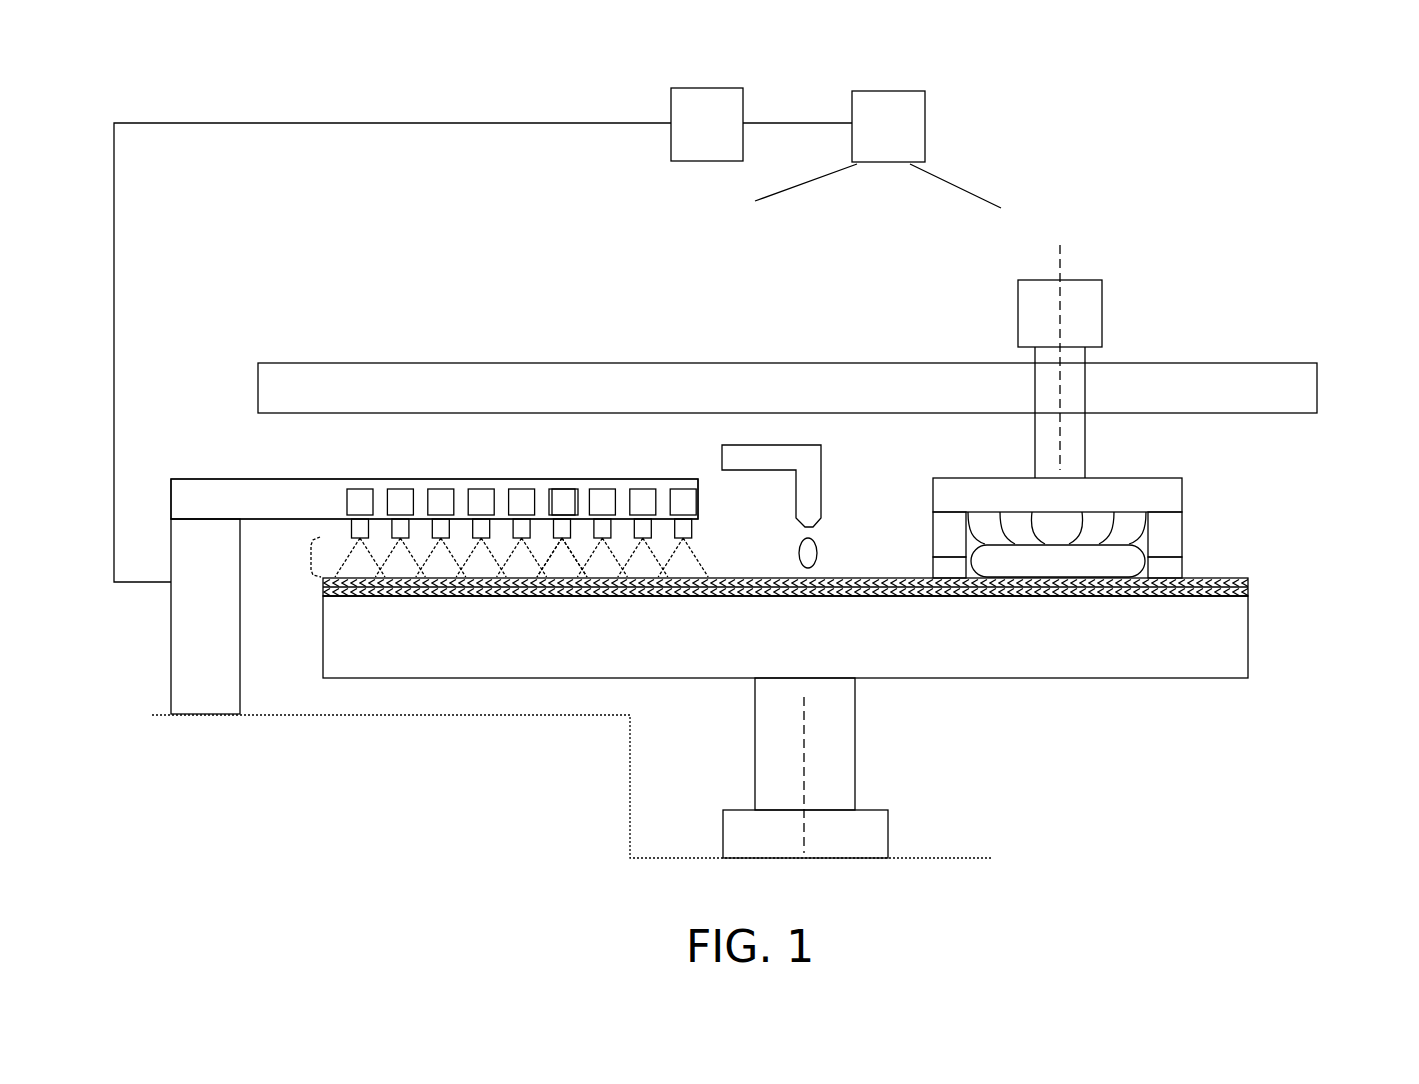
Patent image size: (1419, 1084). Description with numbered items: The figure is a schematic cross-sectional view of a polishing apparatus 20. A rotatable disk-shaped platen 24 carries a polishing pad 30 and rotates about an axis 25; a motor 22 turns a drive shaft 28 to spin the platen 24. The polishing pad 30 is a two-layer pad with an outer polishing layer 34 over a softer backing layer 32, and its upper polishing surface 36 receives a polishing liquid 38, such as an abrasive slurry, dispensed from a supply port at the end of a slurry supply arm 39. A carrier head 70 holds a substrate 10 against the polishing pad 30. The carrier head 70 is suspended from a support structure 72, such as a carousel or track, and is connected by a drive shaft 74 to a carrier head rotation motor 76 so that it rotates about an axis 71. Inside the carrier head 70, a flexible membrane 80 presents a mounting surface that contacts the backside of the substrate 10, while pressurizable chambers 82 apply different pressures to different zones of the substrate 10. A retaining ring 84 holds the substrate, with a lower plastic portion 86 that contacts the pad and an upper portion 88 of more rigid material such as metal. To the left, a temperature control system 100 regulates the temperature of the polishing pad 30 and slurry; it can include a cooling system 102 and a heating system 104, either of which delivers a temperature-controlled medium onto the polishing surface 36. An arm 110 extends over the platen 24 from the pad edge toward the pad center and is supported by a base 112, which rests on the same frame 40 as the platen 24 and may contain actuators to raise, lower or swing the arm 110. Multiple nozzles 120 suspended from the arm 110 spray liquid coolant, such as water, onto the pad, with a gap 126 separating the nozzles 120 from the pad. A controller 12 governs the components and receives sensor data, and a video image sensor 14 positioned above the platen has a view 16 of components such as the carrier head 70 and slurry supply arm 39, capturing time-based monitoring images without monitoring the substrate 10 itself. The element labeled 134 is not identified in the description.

The substrate 10 is at (1058, 561).
The controller 12 is at (707, 124).
The video image sensor 14 is at (888, 126).
The view 16 is at (968, 190).
The polishing apparatus 20 is at (398, 100).
The motor 22 is at (890, 835).
The platen 24 is at (1243, 643).
The axis 25 is at (806, 757).
The drive shaft 28 is at (755, 742).
The polishing pad 30 is at (859, 587).
The backing layer 32 is at (1248, 582).
The polishing layer 34 is at (1248, 590).
The polishing surface 36 is at (1237, 580).
The polishing liquid 38 is at (799, 554).
The slurry supply arm 39 is at (796, 491).
The frame 40 is at (457, 715).
The carrier head 70 is at (1129, 503).
The axis 71 is at (1062, 262).
The support structure 72 is at (1283, 363).
The drive shaft 74 is at (1047, 454).
The carrier head rotation motor 76 is at (1018, 328).
The flexible membrane 80 is at (1130, 520).
The pressurizable chambers 82 is at (1057, 528).
The retaining ring 84 is at (1129, 541).
The lower plastic portion 86 is at (1182, 572).
The upper portion 88 is at (1182, 543).
The temperature control system 100 is at (420, 550).
The cooling system 102 is at (258, 468).
The heating system 104 is at (434, 499).
The arm 110 is at (465, 479).
The base 112 is at (240, 642).
The nozzles 120 is at (560, 528).
The gap 126 is at (311, 557).
The nozzle body 134 is at (563, 500).